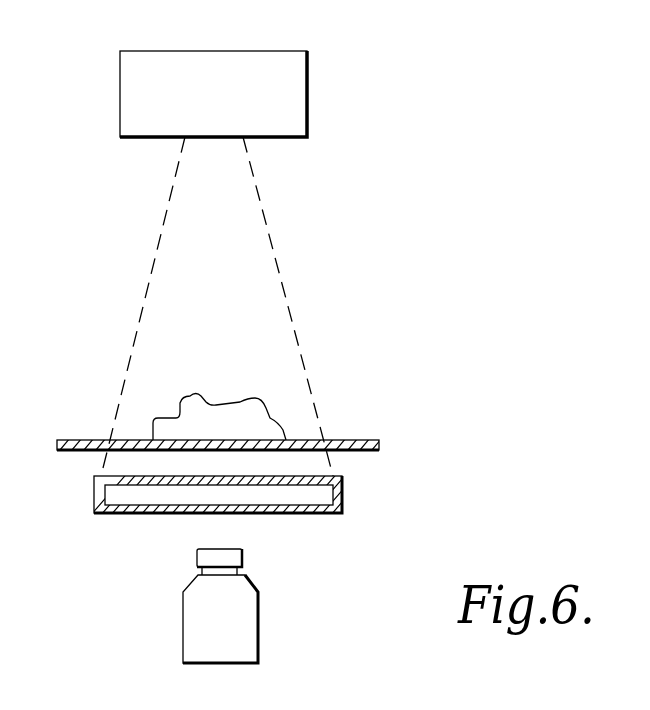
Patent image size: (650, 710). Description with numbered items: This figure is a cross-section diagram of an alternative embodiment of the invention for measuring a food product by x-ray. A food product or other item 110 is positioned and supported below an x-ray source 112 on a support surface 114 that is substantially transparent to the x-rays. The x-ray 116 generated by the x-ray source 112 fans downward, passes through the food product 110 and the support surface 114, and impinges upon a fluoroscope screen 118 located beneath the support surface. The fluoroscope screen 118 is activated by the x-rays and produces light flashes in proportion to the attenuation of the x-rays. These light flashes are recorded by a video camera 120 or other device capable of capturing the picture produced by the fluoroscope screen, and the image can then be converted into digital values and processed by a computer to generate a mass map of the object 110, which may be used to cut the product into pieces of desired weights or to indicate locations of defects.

The food product 110 is at (202, 405).
The x-ray source 112 is at (120, 95).
The support surface 114 is at (85, 440).
The x-ray 116 is at (273, 245).
The fluoroscope screen 118 is at (135, 513).
The video camera 120 is at (258, 622).